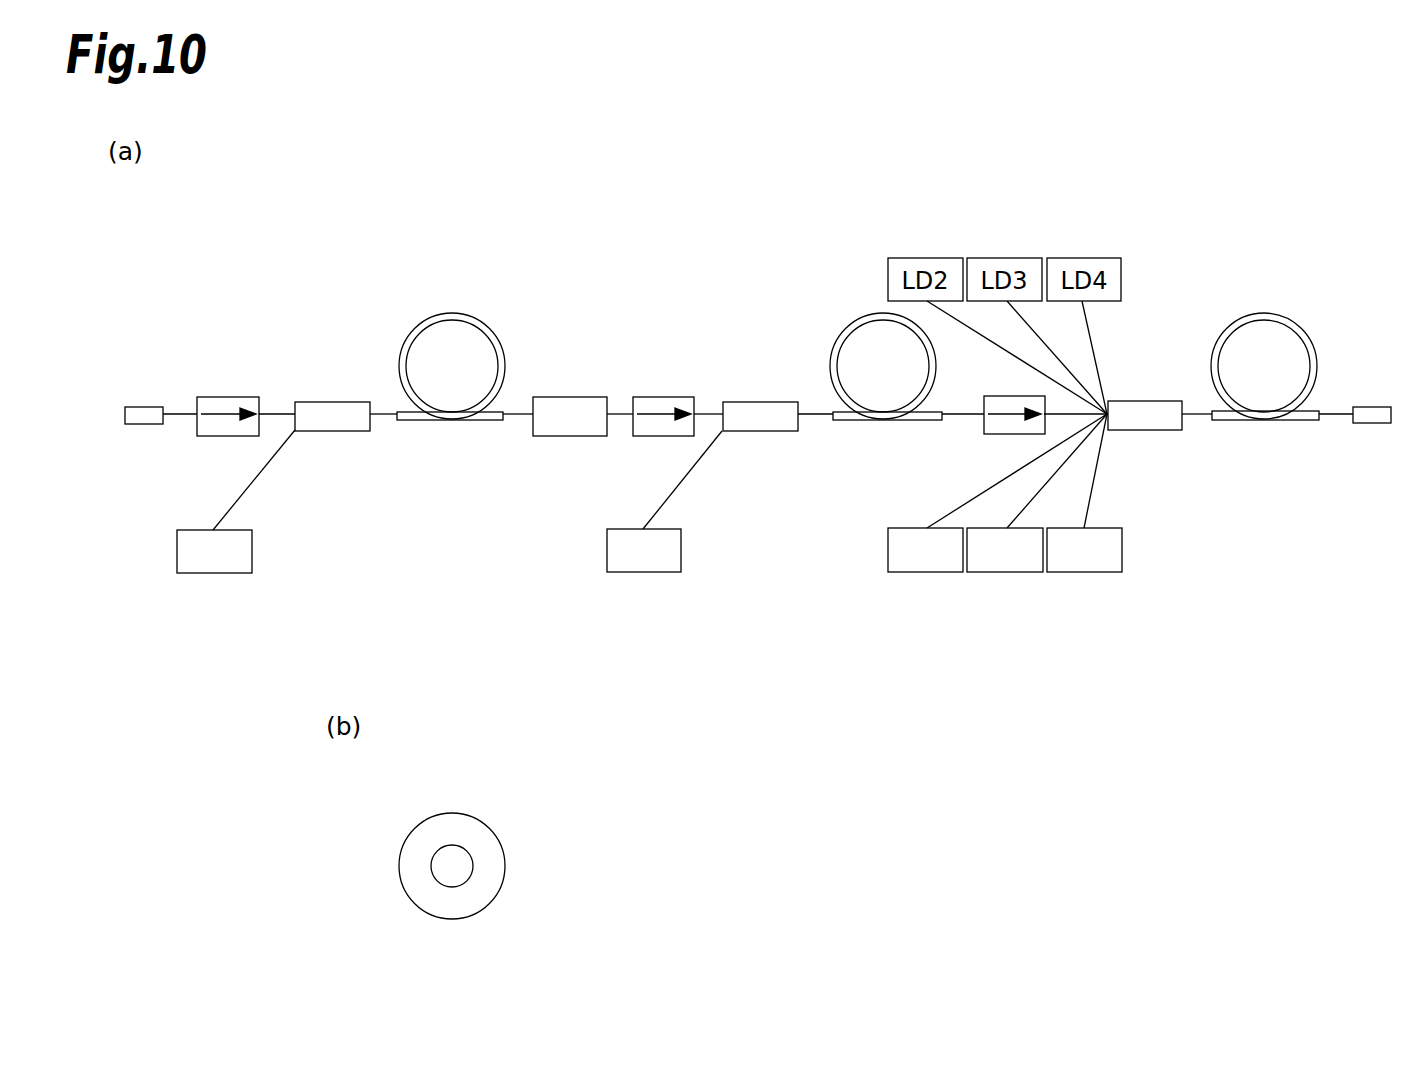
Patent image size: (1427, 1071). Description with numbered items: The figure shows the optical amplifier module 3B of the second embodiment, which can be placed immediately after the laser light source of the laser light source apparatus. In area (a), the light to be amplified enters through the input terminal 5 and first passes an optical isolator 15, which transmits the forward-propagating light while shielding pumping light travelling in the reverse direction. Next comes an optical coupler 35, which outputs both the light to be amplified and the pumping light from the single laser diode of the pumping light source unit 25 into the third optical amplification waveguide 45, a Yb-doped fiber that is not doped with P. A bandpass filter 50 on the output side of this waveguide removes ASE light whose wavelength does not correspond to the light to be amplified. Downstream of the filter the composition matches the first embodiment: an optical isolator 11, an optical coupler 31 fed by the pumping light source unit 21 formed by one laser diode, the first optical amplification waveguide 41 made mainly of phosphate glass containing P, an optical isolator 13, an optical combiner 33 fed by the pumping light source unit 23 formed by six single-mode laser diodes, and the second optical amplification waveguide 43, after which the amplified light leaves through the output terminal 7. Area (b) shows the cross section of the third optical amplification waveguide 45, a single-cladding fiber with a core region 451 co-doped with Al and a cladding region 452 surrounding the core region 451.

The optical amplifier module 3B is at (1332, 206).
The input terminal 5 is at (143, 407).
The output terminal 7 is at (1372, 407).
The optical isolator 11 is at (660, 397).
The optical isolator 13 is at (1000, 396).
The optical isolator 15 is at (220, 397).
The pumping light source unit 21 is at (634, 582).
The pumping light source unit 23 is at (990, 582).
The pumping light source unit 25 is at (205, 582).
The optical coupler 31 is at (760, 402).
The optical combiner 33 is at (1145, 401).
The optical coupler 35 is at (330, 402).
The first optical amplification waveguide 41 is at (879, 313).
The second optical amplification waveguide 43 is at (1262, 313).
The third optical amplification waveguide 45 is at (446, 313).
The bandpass filter 50 is at (578, 397).
The core region 451 is at (459, 868).
The cladding region 452 is at (488, 845).